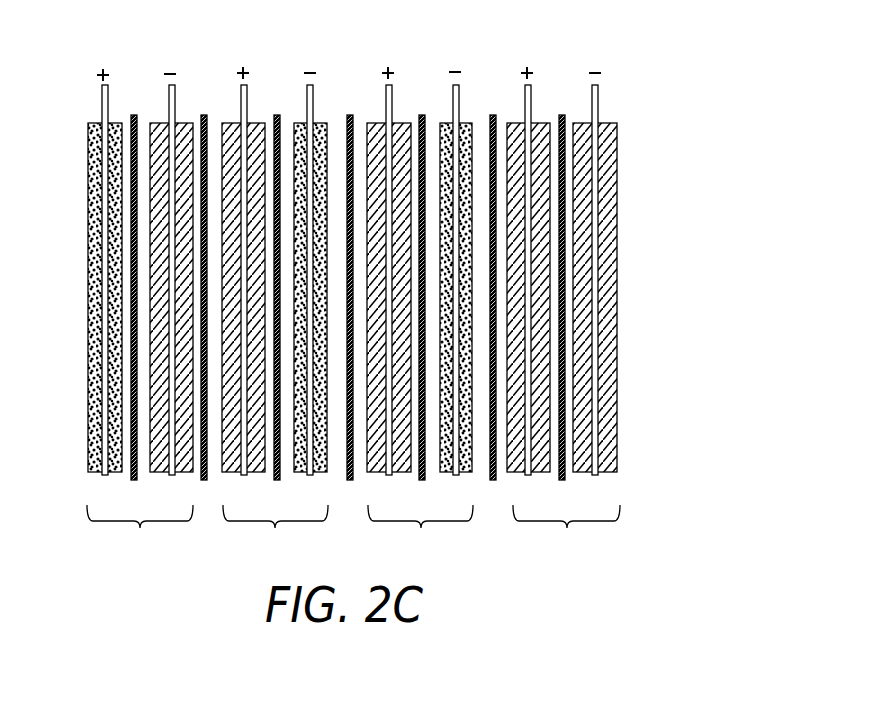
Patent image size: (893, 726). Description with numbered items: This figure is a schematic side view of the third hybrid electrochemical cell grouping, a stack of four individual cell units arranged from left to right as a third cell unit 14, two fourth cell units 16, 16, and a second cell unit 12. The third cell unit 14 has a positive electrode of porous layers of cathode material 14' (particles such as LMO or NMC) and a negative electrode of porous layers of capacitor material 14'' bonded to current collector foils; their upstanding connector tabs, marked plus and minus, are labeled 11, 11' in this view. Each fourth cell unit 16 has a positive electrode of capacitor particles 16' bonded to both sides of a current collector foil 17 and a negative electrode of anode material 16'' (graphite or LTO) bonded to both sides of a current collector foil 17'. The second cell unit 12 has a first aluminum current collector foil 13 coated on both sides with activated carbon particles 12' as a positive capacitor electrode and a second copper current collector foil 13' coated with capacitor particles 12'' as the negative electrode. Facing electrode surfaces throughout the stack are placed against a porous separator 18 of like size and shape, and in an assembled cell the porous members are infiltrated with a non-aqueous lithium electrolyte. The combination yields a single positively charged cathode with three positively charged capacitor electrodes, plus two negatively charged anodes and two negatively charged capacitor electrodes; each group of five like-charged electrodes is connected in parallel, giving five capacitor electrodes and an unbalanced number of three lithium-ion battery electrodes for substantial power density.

The positive electrode tab 11 is at (90, 257).
The negative electrode tab 11' is at (157, 255).
The second cell unit 12 is at (566, 532).
The capacitor material particles 12' is at (591, 297).
The capacitor material particles 12'' is at (631, 297).
The first current collector foil 13 is at (515, 257).
The second current collector foil 13' is at (582, 256).
The third cell unit 14 is at (140, 532).
The cathode material 14' is at (80, 297).
The capacitor material 14'' is at (115, 297).
The fourth cell unit 16 is at (348, 532).
The capacitor particles 16' is at (275, 316).
The anode material 16'' is at (345, 316).
The current collector foil 17 is at (297, 261).
The current collector foil 17' is at (367, 260).
The porous separator 18 is at (134, 114).